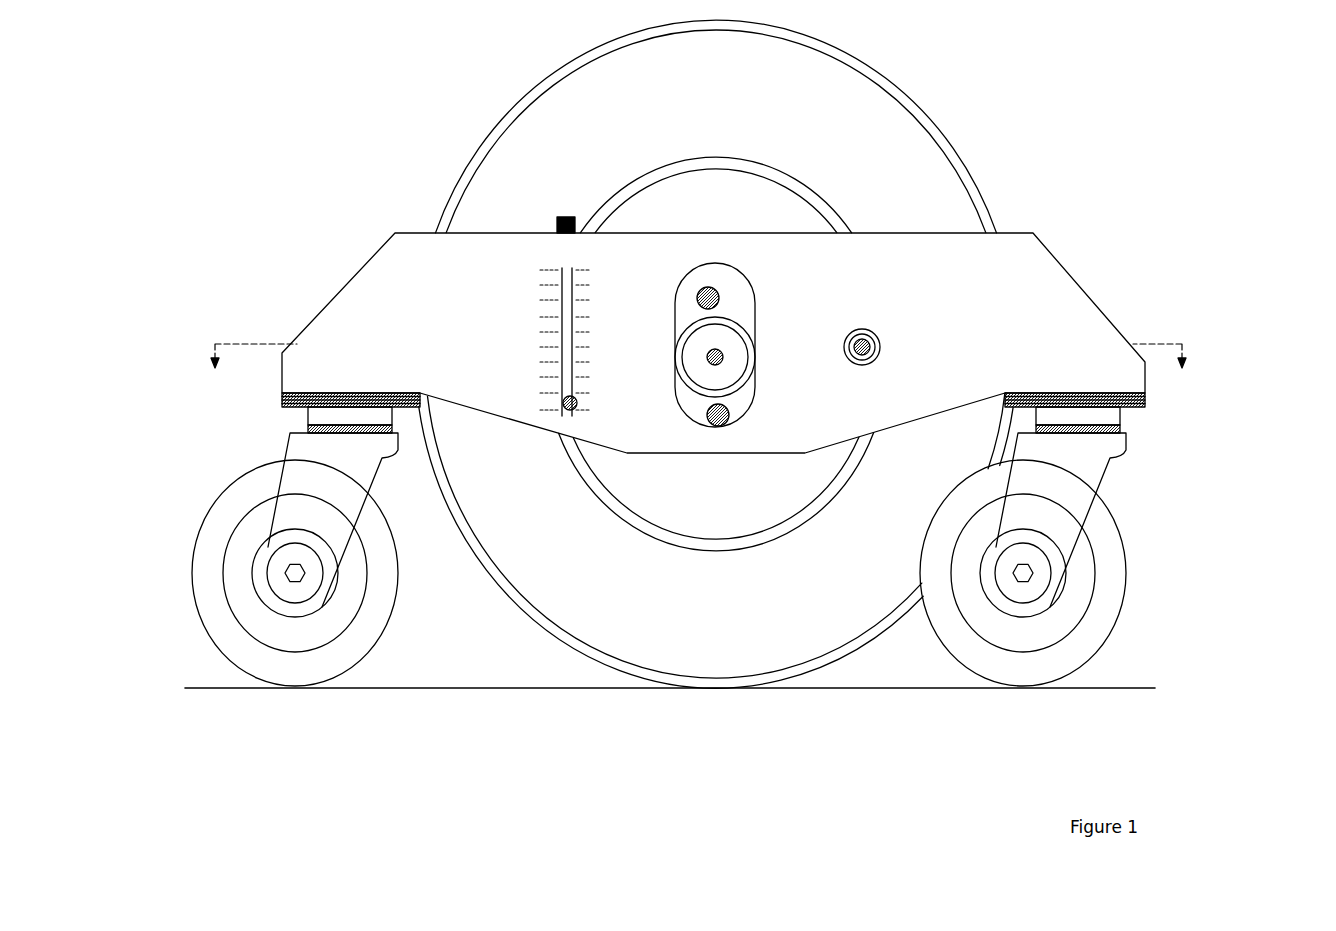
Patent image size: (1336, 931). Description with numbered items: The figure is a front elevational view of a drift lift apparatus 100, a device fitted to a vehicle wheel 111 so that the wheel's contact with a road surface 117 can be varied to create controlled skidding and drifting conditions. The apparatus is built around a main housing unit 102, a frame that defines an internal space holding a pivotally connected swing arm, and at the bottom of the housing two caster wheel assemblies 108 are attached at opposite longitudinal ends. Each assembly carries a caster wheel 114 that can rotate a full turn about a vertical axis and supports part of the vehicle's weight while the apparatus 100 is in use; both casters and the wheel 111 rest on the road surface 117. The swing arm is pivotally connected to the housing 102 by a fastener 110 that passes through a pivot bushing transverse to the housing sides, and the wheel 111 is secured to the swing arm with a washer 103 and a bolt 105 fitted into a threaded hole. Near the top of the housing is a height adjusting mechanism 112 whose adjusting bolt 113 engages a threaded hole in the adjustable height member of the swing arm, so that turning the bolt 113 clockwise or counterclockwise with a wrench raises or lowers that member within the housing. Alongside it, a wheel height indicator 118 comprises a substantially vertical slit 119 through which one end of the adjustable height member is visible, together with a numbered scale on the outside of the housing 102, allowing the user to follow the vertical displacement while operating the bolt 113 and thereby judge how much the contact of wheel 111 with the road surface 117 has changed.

The drift lift apparatus 100 is at (1117, 255).
The main housing unit 102 is at (383, 246).
The washer 103 is at (727, 376).
The bolt 105 is at (714, 352).
The caster wheel assembly 108 is at (198, 480).
The fastener 110 is at (870, 345).
The wheel 111 is at (735, 636).
The height adjusting mechanism 112 is at (1071, 338).
The adjusting bolt 113 is at (566, 216).
The caster wheel 114 is at (218, 568).
The road surface 117 is at (552, 688).
The wheel height indicator 118 is at (544, 400).
The vertical slit 119 is at (572, 268).